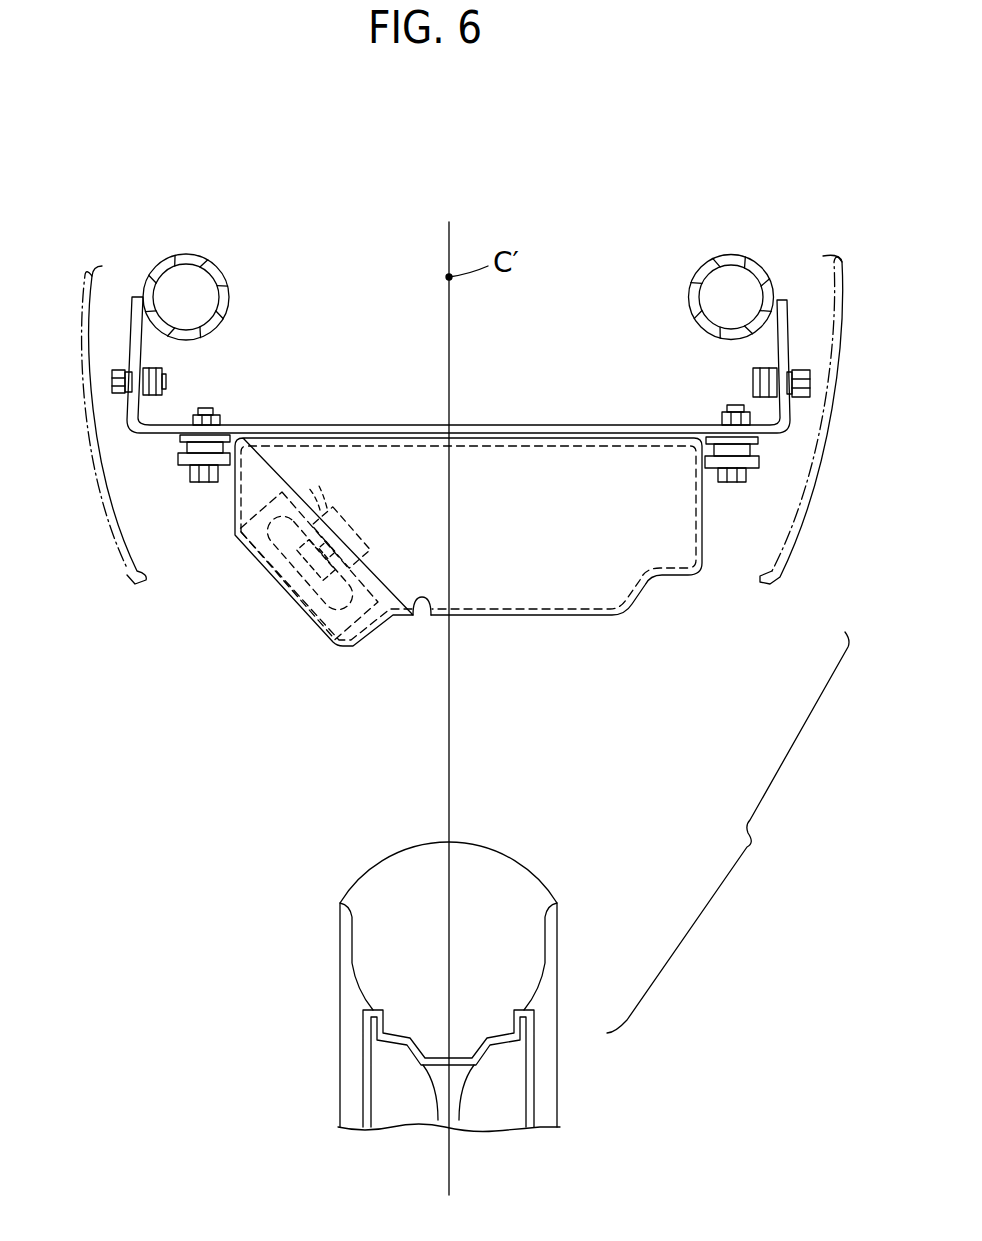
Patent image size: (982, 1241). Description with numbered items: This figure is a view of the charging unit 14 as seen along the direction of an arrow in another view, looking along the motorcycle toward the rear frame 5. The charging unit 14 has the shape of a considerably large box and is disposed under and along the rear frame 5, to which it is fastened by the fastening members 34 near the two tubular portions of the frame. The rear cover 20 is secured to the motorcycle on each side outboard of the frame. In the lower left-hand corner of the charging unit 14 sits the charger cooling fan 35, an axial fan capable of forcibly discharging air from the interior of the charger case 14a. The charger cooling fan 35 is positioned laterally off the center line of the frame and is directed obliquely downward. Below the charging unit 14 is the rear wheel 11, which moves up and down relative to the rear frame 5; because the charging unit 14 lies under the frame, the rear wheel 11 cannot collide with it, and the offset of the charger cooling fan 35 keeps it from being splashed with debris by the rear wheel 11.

The rear frame 5 is at (227, 281).
The fastening member 34 is at (143, 347).
The rear cover 20 is at (119, 558).
The charging unit 14 is at (600, 626).
The charger case 14a is at (420, 598).
The charger cooling fan 35 is at (303, 610).
The rear wheel 11 is at (557, 942).